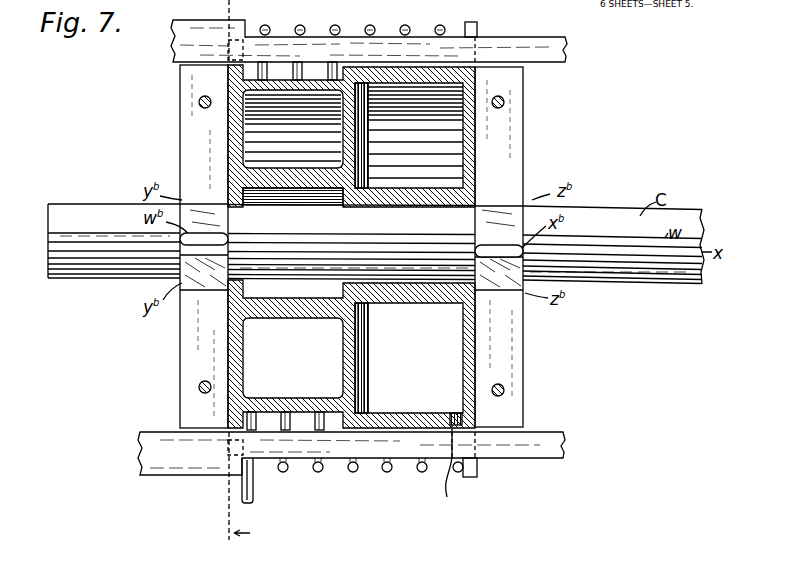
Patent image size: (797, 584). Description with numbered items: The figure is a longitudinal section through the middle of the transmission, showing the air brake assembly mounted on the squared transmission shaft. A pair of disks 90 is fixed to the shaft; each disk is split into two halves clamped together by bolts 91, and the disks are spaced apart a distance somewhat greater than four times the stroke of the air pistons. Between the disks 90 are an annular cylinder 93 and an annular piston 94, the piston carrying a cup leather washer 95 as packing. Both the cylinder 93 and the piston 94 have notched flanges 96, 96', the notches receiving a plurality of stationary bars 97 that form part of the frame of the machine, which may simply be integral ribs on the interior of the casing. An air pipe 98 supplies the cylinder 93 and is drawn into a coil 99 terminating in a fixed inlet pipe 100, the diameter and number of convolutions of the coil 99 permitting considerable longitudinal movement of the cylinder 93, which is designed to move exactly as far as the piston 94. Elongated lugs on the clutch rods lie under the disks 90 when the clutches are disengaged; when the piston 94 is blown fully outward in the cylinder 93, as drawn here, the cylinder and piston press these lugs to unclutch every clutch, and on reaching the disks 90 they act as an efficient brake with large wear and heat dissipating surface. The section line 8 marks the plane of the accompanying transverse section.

The section line 8- 8 is at (239, 281).
The disks 90 is at (196, 356).
The bolts 91 is at (199, 102).
The annular cylinder 93 is at (420, 303).
The annular piston 94 is at (287, 318).
The cup leather washer 95 is at (369, 373).
The notched flange 96 is at (492, 256).
The notched flange 96' is at (252, 257).
The stationary bars 97 is at (565, 45).
The air pipe 98 is at (450, 466).
The coil 99 is at (352, 474).
The fixed inlet pipe 100 is at (253, 500).